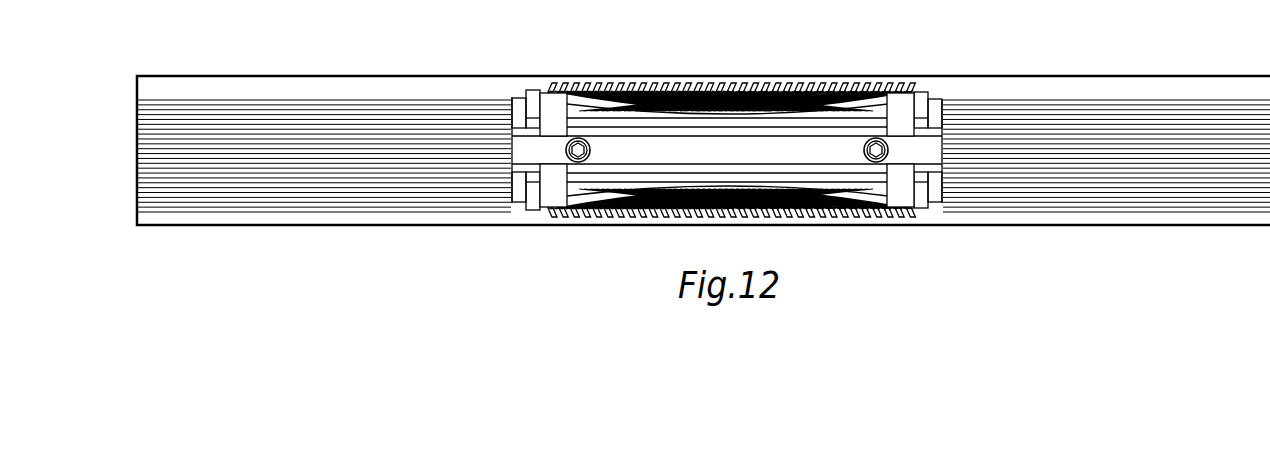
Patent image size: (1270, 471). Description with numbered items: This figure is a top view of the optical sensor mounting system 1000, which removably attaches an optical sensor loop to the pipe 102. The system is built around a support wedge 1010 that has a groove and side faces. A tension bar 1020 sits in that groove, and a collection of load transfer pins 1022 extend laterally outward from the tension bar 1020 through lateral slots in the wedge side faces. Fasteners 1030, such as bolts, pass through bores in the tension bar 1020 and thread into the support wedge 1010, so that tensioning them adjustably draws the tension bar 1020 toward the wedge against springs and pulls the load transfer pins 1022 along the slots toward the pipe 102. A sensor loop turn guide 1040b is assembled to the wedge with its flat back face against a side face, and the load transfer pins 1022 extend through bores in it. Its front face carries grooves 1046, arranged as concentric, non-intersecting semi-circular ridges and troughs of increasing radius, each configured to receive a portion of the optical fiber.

The pipe 102 is at (1142, 158).
The optical sensor mounting system 1000 is at (922, 33).
The support wedge 1010 is at (940, 171).
The tension bar 1020 is at (745, 158).
The load transfer pins 1022 is at (545, 105).
The fasteners 1030 is at (562, 148).
The sensor loop turn guide 1040b is at (720, 85).
The grooves 1046 is at (667, 71).